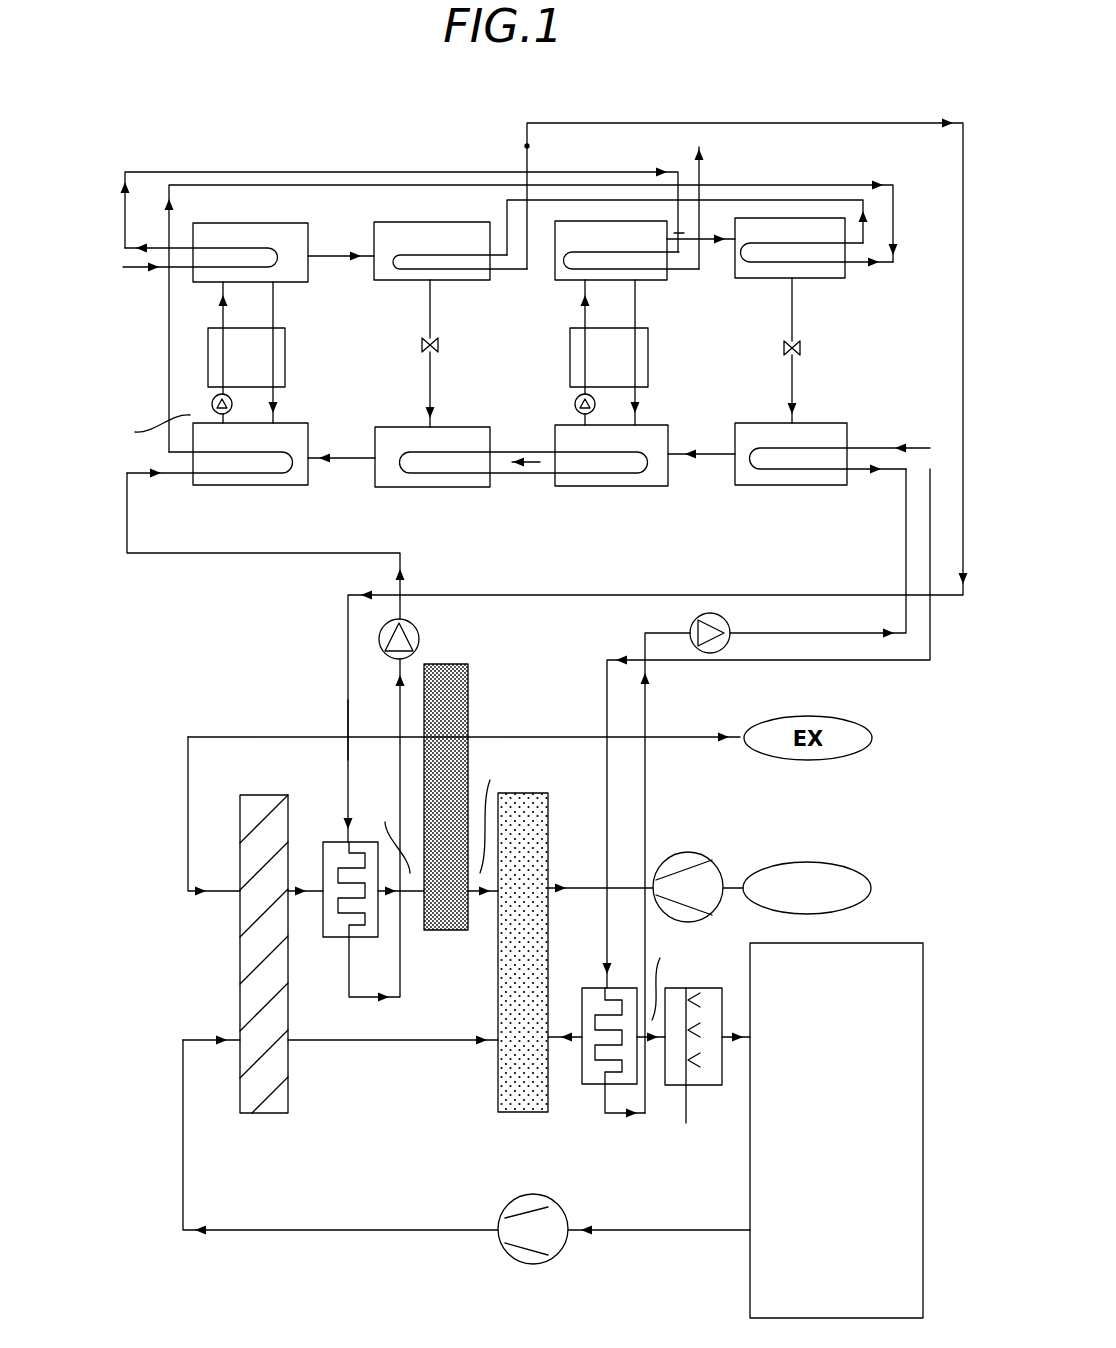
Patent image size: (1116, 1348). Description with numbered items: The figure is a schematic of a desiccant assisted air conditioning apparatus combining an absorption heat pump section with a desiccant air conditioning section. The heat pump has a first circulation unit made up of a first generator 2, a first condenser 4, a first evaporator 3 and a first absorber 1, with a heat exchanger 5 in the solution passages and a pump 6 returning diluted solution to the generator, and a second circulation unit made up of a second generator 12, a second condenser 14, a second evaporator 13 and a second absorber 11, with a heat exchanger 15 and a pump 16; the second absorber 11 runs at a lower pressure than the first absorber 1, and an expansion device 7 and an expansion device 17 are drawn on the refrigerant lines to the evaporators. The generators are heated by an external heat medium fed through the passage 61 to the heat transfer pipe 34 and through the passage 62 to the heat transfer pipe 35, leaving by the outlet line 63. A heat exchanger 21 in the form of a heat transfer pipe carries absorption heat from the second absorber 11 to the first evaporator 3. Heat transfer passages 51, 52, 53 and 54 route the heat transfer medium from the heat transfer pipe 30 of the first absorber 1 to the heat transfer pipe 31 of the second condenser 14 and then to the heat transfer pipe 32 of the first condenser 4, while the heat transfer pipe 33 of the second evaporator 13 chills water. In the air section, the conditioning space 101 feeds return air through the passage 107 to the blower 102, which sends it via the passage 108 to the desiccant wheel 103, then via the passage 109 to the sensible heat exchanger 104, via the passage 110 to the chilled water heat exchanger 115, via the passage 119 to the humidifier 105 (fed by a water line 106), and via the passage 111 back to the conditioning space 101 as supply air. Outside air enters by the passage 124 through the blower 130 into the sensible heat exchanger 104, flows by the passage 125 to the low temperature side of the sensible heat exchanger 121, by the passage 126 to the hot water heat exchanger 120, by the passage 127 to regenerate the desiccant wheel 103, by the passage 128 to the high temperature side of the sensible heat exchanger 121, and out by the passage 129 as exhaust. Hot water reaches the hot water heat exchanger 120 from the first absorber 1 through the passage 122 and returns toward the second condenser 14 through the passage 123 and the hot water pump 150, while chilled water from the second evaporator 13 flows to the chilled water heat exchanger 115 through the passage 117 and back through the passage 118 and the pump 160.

The first absorber 1 is at (232, 485).
The first generator 2 is at (243, 223).
The first evaporator 3 is at (410, 487).
The first condenser 4 is at (437, 222).
The heat exchanger 5 is at (285, 345).
The pump 6 is at (212, 400).
The expansion valve 7 is at (420, 342).
The second absorber 11 is at (607, 486).
The second generator 12 is at (623, 222).
The second evaporator 13 is at (790, 485).
The second condenser 14 is at (800, 222).
The heat exchanger 15 is at (648, 345).
The pump 16 is at (575, 398).
The expansion valve of second cycle 17 is at (800, 348).
The heat exchanger 21 is at (523, 473).
The heat transfer pipe 30 is at (262, 485).
The heat transfer pipe 31 is at (820, 278).
The heat transfer pipe 32 is at (455, 280).
The heat transfer pipe 33 is at (822, 482).
The heat transfer pipe 34 is at (205, 268).
The heat transfer pipe 35 is at (590, 225).
The heat transfer passage 51 is at (145, 475).
The heat transfer passage 52 is at (858, 168).
The heat transfer passage 53 is at (750, 200).
The heat transfer passage 54 is at (527, 147).
The passage 61 is at (135, 268).
The passage 62 is at (350, 172).
The heat source fluid outlet line 63 is at (670, 278).
The conditioning space 101 is at (885, 943).
The blower 102 is at (518, 1200).
The desiccant wheel 103 is at (250, 945).
The sensible heat exchanger 104 is at (498, 1080).
The humidifier 105 is at (693, 988).
The water supply line 106 is at (686, 1110).
The passage 107 is at (633, 1230).
The passage 108 is at (260, 1230).
The passage 109 is at (365, 1040).
The passage 110 is at (568, 1040).
The passage 111 is at (742, 1032).
The chilled water heat exchanger 115 is at (590, 988).
The passage 117 is at (607, 700).
The passage 118 is at (645, 712).
The passage 119 is at (655, 1045).
The hot water heat exchanger 120 is at (338, 842).
The sensible heat exchanger 121 is at (468, 680).
The passage 122 is at (348, 700).
The passage 123 is at (375, 997).
The passage 124 is at (740, 880).
The passage 125 is at (483, 893).
The passage 126 is at (410, 893).
The passage 127 is at (305, 893).
The passage 128 is at (188, 800).
The passage 129 is at (578, 737).
The blower 130 is at (688, 852).
The hot water pump 150 is at (415, 622).
The chilled water pump 160 is at (712, 612).